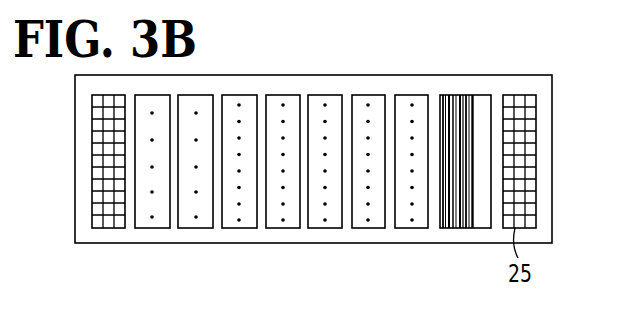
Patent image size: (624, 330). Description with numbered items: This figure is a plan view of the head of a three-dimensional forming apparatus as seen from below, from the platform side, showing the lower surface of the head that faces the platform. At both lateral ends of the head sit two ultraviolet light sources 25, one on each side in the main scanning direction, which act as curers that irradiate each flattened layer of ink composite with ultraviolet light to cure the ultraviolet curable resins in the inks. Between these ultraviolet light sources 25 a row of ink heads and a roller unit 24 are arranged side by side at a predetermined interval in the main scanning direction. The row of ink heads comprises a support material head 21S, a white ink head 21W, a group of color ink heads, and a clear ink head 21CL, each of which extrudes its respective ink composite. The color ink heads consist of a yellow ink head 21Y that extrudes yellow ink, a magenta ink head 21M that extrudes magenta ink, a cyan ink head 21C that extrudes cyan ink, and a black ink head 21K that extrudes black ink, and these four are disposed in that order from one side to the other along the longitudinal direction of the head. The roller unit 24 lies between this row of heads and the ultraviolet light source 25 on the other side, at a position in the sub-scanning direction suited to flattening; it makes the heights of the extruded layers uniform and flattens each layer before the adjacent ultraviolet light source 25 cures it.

The ultraviolet light source 25 is at (107, 228).
The support material head 21S is at (152, 228).
The white ink head 21W is at (195, 228).
The yellow ink head 21Y is at (237, 228).
The magenta ink head 21M is at (283, 228).
The cyan ink head 21C is at (325, 228).
The black ink head 21K is at (370, 228).
The clear ink head 21CL is at (412, 228).
The roller unit 24 is at (465, 228).